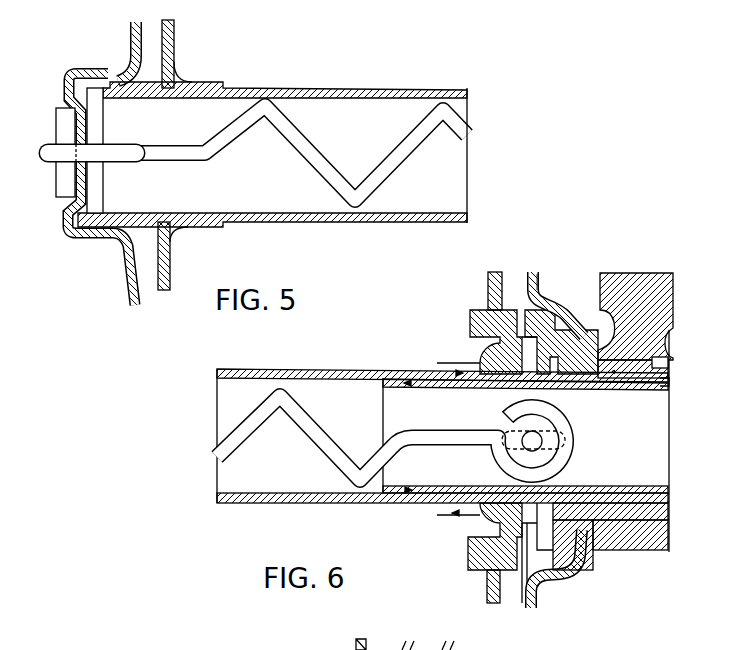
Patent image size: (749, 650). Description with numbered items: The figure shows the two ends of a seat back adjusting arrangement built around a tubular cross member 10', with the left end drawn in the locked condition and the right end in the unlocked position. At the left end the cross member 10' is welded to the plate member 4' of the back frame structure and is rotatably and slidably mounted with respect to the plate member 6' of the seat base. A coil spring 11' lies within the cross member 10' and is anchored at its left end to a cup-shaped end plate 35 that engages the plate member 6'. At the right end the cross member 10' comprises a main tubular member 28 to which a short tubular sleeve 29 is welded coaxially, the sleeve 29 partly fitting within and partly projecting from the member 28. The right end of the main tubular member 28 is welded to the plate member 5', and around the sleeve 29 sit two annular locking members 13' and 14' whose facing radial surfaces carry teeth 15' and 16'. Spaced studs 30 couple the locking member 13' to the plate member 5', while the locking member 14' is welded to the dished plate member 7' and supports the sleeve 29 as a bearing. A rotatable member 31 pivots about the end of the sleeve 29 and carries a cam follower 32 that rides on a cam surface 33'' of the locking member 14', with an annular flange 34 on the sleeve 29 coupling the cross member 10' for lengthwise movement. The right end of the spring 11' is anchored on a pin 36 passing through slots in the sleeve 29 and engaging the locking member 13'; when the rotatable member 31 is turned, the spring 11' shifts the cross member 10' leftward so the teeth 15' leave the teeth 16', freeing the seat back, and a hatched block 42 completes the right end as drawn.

In FIG. 5, the plate member 4' is at (163, 54).
In FIG. 5, the coil spring 11' is at (257, 155).
In FIG. 6, the coil spring 11' is at (391, 438).
In FIG. 5, the cross member 10' is at (272, 175).
In FIG. 6, the cross member 10' is at (443, 441).
In FIG. 5, the cup-shaped end plate 35 is at (70, 239).
In FIG. 5, the plate member 6' is at (165, 273).
In FIG. 6, the main tubular member 28 is at (339, 371).
In FIG. 6, the short tubular sleeve 29 is at (434, 385).
In FIG. 6, the pin 36 is at (545, 429).
In FIG. 6, the plate member 5' is at (478, 291).
In FIG. 6, the studs or projections 30 is at (470, 320).
In FIG. 6, the teeth 15' is at (476, 481).
In FIG. 6, the locking member 13' is at (510, 438).
In FIG. 6, the plate member 7' is at (560, 434).
In FIG. 6, the teeth 16' is at (555, 444).
In FIG. 6, the rotatable member 31 is at (637, 288).
In FIG. 6, the cam follower 32 is at (658, 362).
In FIG. 6, the annular flange 34 is at (668, 378).
In FIG. 6, the wall 33'' is at (620, 397).
In FIG. 6, the locking member 14' is at (610, 554).
In FIG. 6, the block 42 is at (625, 546).